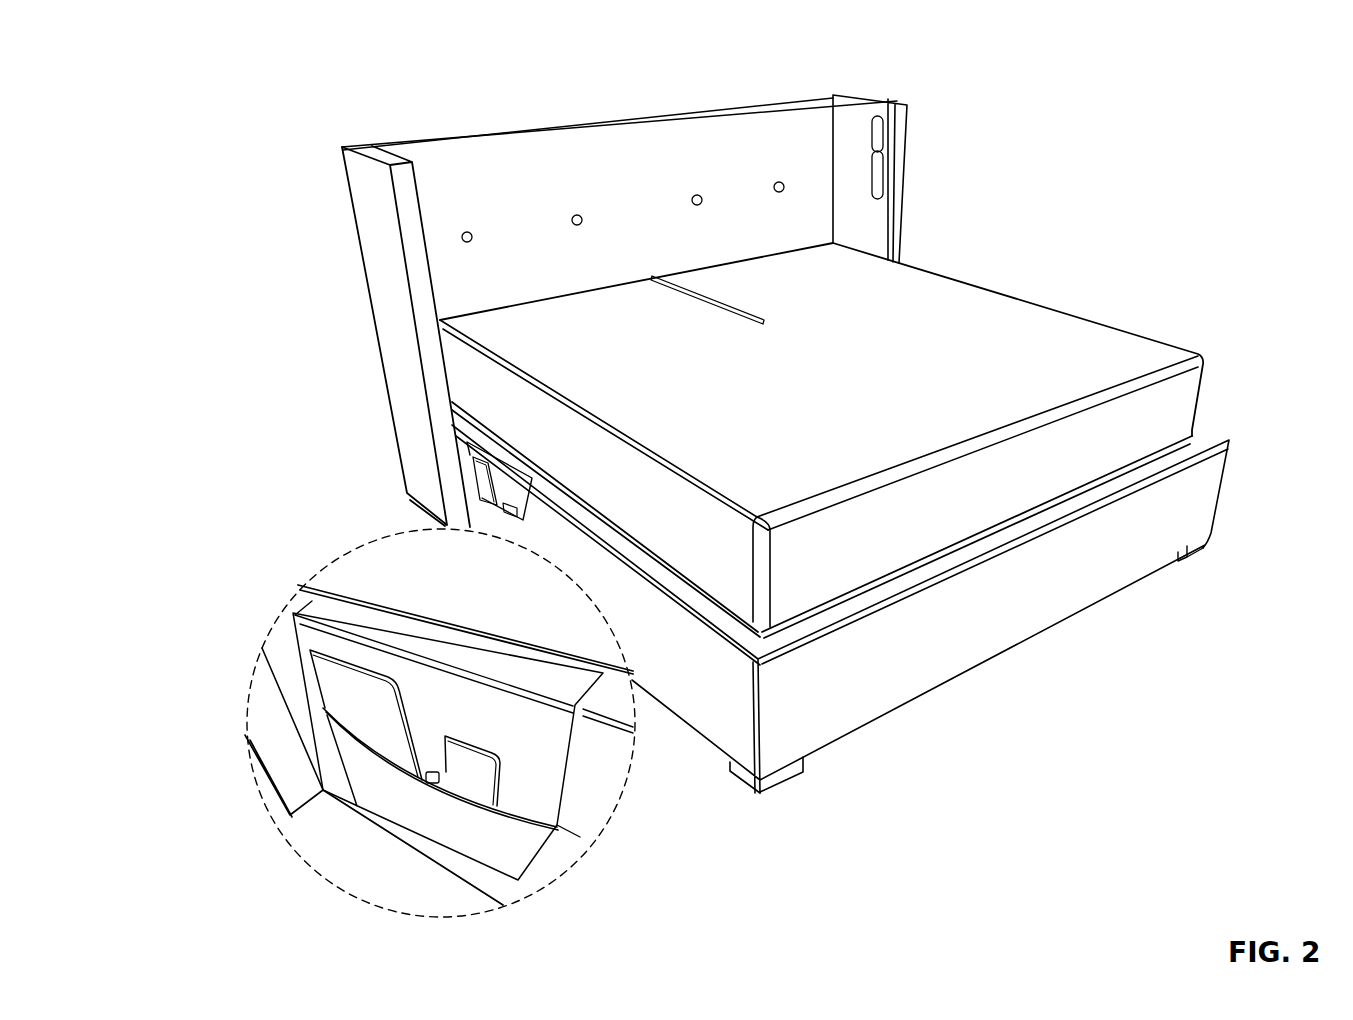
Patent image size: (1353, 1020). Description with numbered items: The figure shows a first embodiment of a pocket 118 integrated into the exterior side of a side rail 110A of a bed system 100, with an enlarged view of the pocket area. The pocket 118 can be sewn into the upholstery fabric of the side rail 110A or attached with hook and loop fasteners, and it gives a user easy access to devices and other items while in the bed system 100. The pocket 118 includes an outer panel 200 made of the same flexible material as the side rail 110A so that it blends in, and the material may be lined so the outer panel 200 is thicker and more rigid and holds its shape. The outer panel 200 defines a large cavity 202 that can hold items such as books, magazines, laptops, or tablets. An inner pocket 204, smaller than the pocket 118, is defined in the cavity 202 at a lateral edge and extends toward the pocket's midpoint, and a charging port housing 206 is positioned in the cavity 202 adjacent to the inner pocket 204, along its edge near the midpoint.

The bed system 100 is at (267, 79).
The side rail 110A is at (712, 686).
The pocket 118 is at (483, 504).
The outer panel 200 is at (405, 775).
The cavity 202 is at (327, 712).
The inner pocket 204 is at (517, 819).
The charging port housing 206 is at (431, 785).